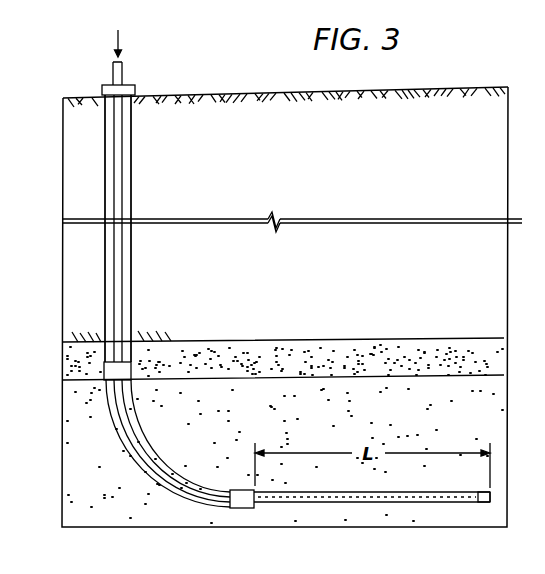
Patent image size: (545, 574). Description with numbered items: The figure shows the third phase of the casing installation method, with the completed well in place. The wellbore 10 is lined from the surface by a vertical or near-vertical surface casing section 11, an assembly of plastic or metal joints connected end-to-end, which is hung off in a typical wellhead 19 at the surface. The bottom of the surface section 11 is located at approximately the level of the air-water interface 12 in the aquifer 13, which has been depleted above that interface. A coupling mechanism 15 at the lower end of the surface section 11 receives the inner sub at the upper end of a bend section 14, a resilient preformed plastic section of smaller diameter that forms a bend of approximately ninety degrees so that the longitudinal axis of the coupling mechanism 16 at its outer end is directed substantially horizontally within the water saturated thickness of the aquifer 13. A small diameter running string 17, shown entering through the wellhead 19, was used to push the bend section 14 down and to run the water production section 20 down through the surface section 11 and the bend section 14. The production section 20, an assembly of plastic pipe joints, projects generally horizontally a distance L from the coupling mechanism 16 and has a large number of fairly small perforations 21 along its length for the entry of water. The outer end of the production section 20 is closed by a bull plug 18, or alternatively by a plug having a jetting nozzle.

The wellbore 10 is at (131, 128).
The surface casing section 11 is at (105, 157).
The air-water interface 12 is at (364, 375).
The aquifer 13 is at (200, 453).
The bend section 14 is at (120, 440).
The coupling mechanism 15 is at (115, 372).
The coupling mechanism 16 is at (242, 508).
The running string 17 is at (120, 173).
The bull plug 18 is at (487, 503).
The wellhead 19 is at (102, 90).
The water production section 20 is at (337, 506).
The perforations 21 is at (415, 498).